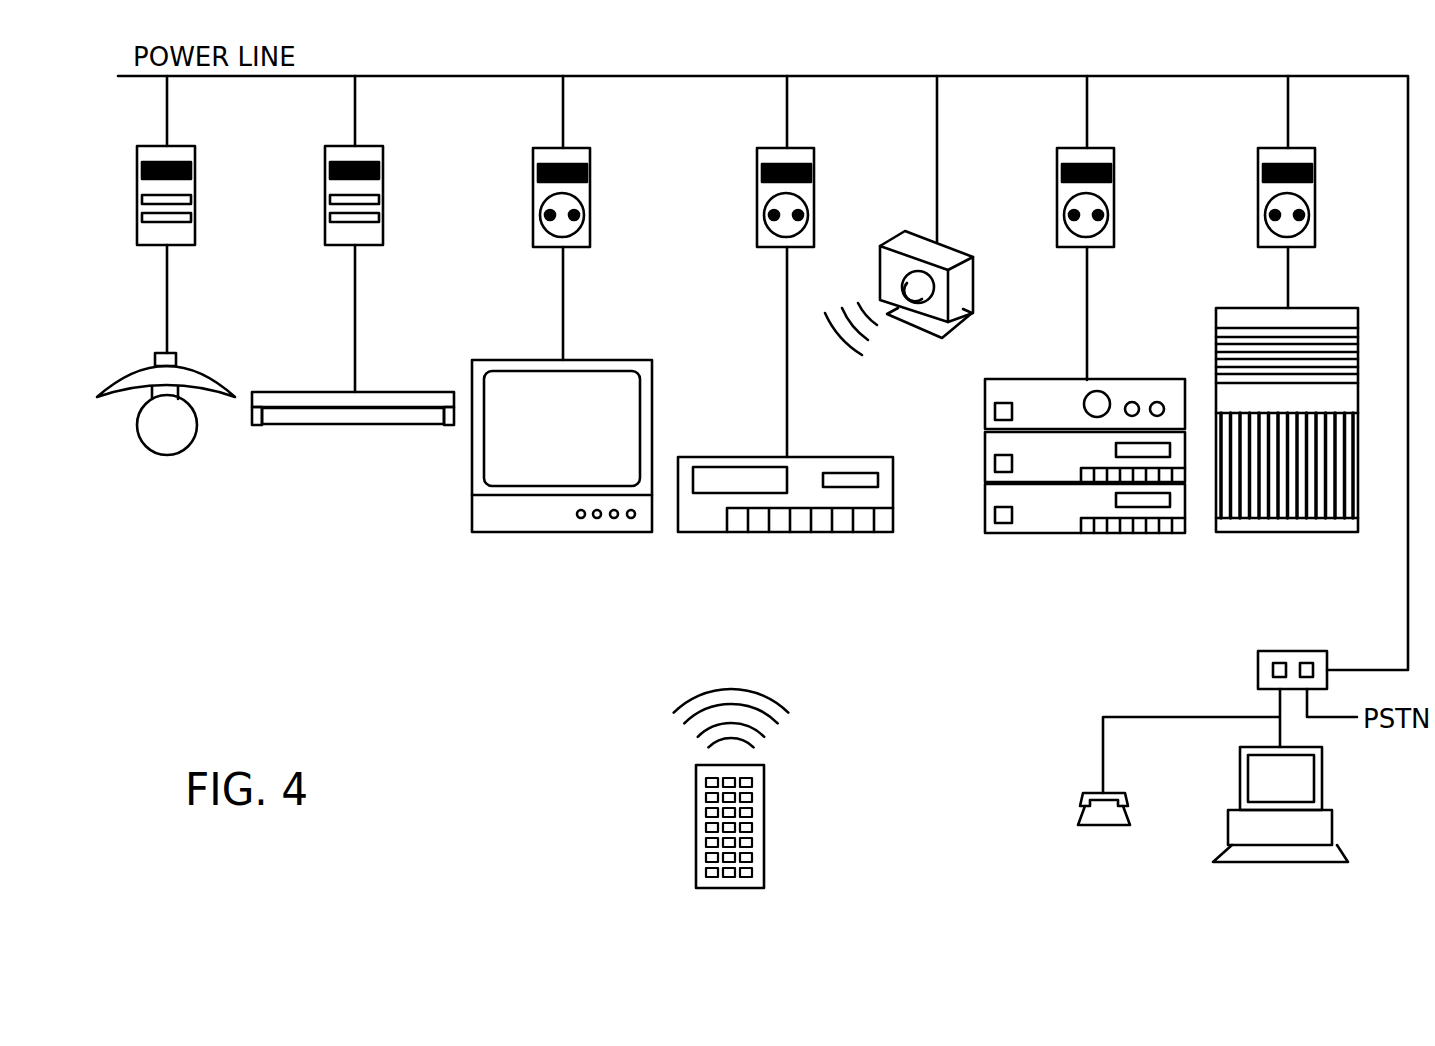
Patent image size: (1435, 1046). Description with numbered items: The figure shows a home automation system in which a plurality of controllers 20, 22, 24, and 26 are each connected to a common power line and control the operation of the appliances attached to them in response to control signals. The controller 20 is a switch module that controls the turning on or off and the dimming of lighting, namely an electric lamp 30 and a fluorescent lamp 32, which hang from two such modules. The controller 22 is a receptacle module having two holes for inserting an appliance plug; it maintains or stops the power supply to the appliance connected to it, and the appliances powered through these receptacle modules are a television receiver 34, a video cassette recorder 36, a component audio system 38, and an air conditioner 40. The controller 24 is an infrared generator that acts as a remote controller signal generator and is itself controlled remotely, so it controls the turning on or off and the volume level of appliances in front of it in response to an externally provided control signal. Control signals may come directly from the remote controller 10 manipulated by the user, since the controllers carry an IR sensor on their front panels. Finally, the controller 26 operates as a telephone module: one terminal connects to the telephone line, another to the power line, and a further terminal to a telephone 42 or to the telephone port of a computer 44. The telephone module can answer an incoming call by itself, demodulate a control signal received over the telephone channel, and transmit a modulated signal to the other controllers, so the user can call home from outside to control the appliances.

The remote controller 10 is at (764, 823).
The switch module controller 20 is at (195, 165).
The receptacle module controller 22 is at (590, 167).
The infrared generator controller 24 is at (973, 286).
The telephone module controller 26 is at (1307, 651).
The electric lamp 30 is at (170, 453).
The fluorescent lamp 32 is at (367, 425).
The television receiver 34 is at (588, 532).
The video cassette recorder 36 is at (822, 532).
The component audio system 38 is at (1130, 533).
The air conditioner 40 is at (1312, 533).
The telephone 42 is at (1128, 802).
The computer 44 is at (1322, 787).